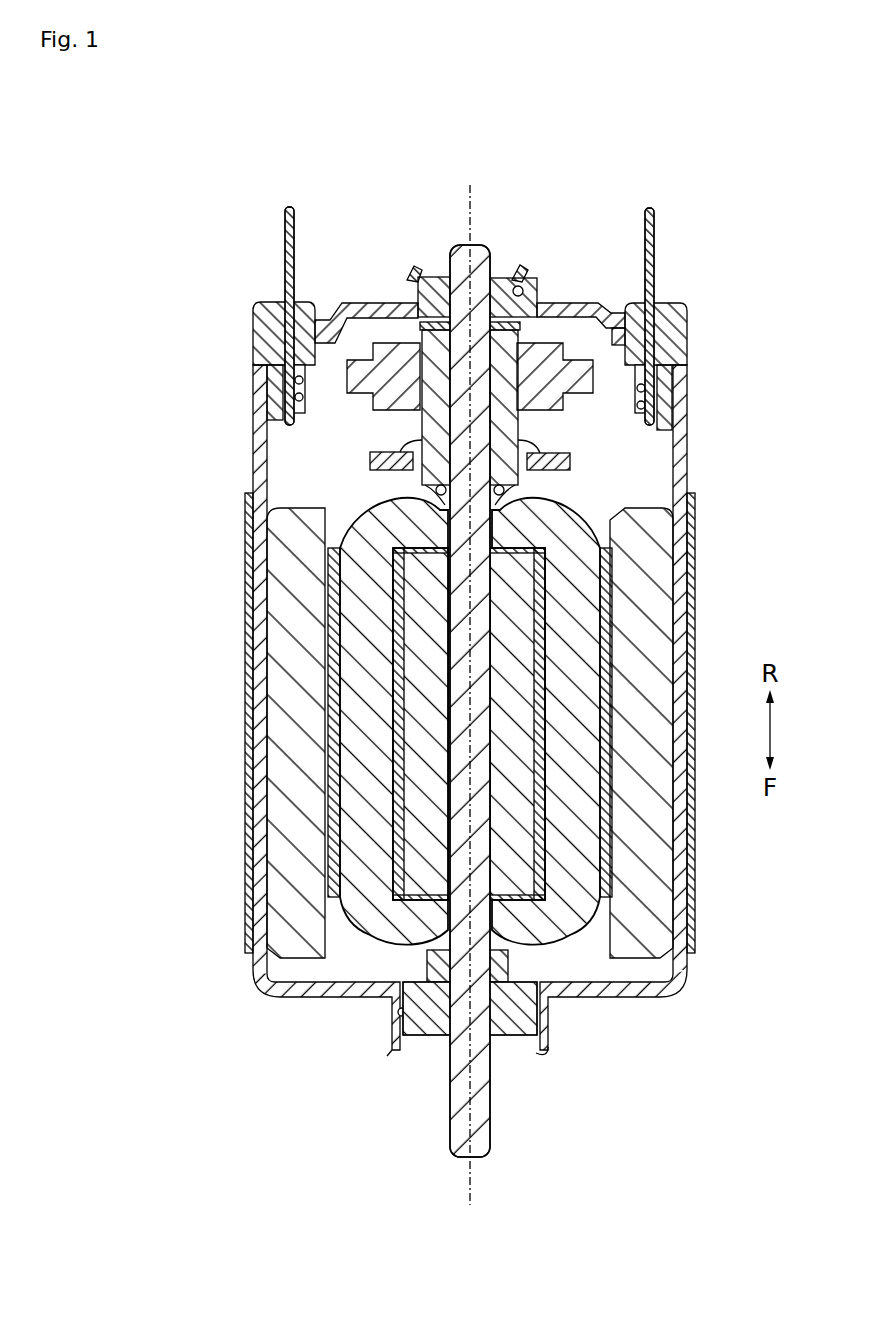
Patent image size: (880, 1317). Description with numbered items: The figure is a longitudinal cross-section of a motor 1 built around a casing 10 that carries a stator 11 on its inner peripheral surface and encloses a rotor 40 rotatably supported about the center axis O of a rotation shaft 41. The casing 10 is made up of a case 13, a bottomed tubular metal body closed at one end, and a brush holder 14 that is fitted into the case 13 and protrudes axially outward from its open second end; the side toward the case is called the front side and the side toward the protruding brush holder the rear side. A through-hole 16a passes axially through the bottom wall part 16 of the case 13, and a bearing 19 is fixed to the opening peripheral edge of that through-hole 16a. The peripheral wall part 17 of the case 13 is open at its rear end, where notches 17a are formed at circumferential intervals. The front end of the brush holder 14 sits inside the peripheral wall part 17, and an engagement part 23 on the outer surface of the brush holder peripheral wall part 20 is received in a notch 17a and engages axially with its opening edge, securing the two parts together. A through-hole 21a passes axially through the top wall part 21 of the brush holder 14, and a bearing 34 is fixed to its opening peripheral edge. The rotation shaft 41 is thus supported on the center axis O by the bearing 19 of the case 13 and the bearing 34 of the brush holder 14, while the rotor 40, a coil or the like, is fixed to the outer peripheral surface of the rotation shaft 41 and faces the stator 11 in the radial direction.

The motor 1 is at (170, 185).
The casing 10 is at (695, 282).
The stator 11 is at (290, 545).
The case 13 is at (185, 900).
The brush holder 14 is at (410, 233).
The bottom wall part 16 is at (320, 996).
The through-hole 16a is at (396, 1014).
The peripheral wall part 17 is at (253, 920).
The notch 17a is at (256, 354).
The bearing 19 is at (428, 1037).
The peripheral wall part 20 is at (302, 312).
The top wall part 21 is at (372, 303).
The through-hole 21a is at (532, 288).
The engagement part 23 is at (258, 336).
The bearing 34 is at (510, 277).
The rotor 40 is at (590, 504).
The rotation shaft 41 is at (488, 1088).
The center axis O is at (472, 211).